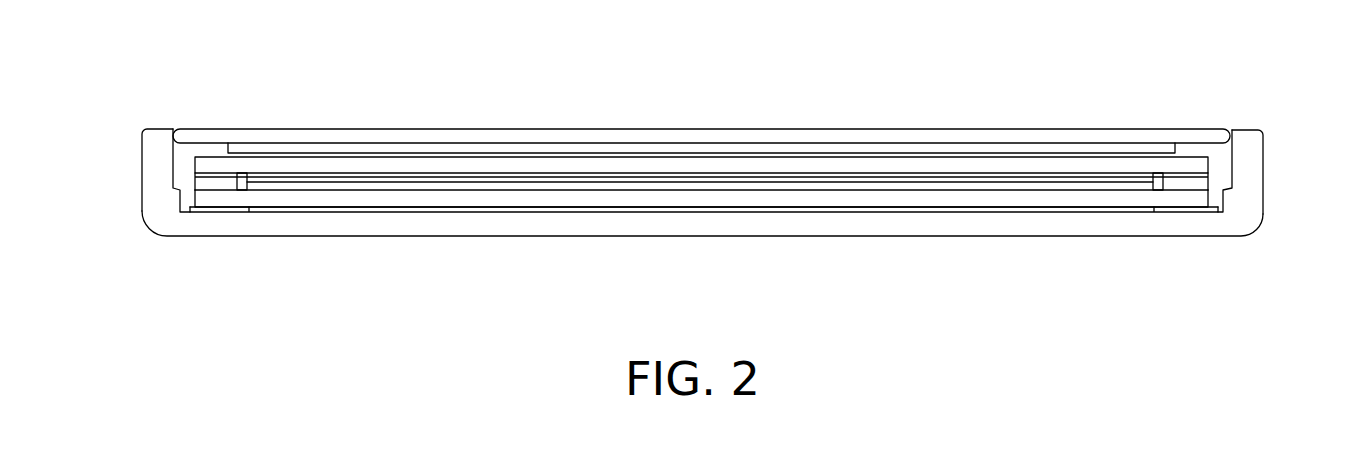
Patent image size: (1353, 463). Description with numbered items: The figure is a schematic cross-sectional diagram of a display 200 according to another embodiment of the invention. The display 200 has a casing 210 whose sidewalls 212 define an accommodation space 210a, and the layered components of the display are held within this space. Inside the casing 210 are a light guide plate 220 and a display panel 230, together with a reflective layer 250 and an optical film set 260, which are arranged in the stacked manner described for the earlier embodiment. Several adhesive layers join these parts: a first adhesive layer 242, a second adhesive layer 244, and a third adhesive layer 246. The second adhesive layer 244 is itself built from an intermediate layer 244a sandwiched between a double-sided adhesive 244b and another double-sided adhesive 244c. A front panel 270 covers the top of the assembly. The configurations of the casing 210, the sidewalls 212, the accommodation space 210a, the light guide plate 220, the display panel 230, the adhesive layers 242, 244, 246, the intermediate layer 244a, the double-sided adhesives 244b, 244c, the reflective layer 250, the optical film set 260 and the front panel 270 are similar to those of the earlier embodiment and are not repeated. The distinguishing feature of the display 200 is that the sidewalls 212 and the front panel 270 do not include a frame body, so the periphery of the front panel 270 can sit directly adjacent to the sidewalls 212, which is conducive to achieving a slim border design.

The display 200 is at (704, 162).
The casing 210 is at (865, 227).
The accommodation space 210a is at (1220, 158).
The sidewalls 212 is at (150, 160).
The light guide plate 220 is at (645, 202).
The display panel 230 is at (775, 163).
The first adhesive layer 242 is at (218, 212).
The second adhesive layer 244 is at (342, 52).
The intermediate layer 244a is at (238, 180).
The double-sided adhesive 244b is at (208, 173).
The double-sided adhesive 244c is at (257, 189).
The third adhesive layer 246 is at (870, 150).
The reflective layer 250 is at (540, 207).
The optical film set 260 is at (460, 186).
The front panel 270 is at (1092, 137).